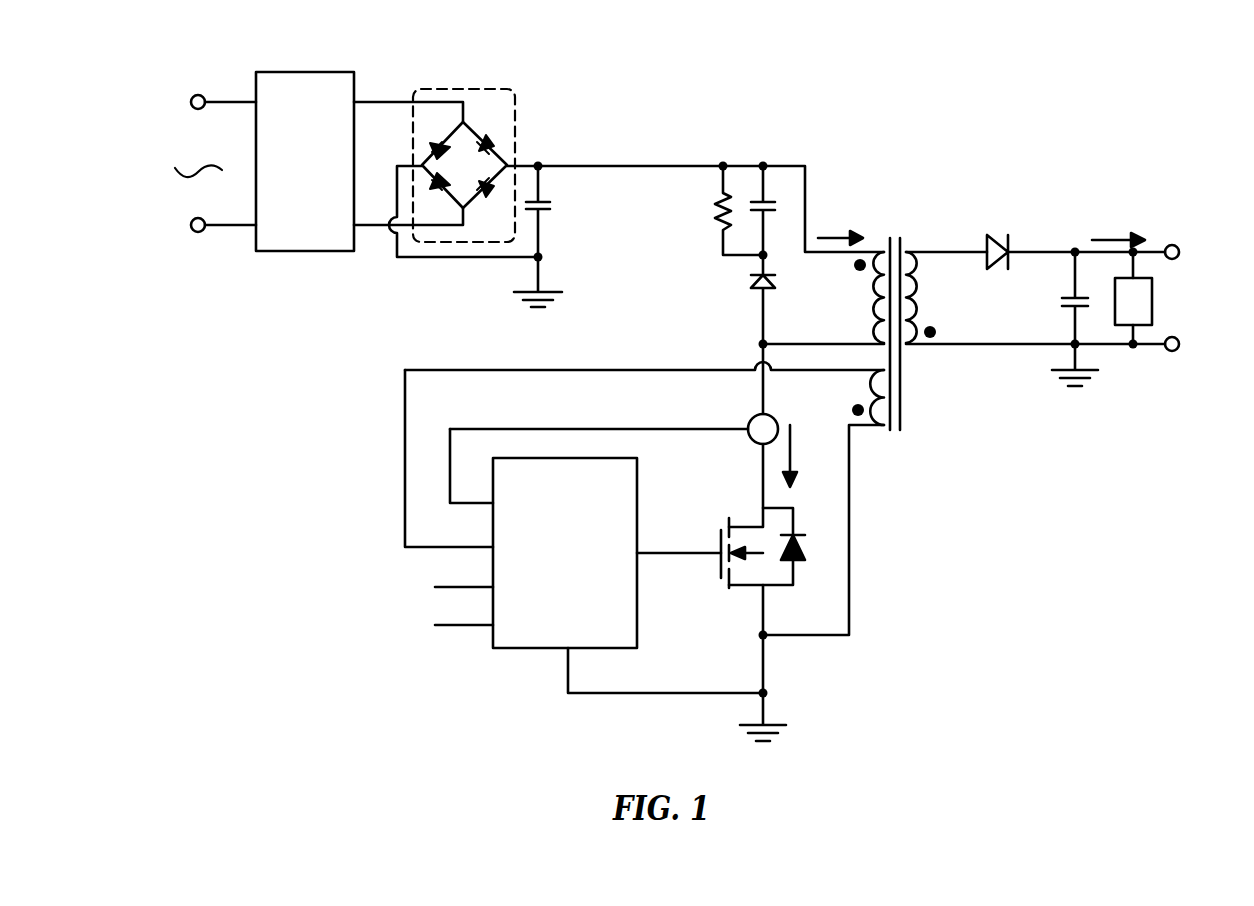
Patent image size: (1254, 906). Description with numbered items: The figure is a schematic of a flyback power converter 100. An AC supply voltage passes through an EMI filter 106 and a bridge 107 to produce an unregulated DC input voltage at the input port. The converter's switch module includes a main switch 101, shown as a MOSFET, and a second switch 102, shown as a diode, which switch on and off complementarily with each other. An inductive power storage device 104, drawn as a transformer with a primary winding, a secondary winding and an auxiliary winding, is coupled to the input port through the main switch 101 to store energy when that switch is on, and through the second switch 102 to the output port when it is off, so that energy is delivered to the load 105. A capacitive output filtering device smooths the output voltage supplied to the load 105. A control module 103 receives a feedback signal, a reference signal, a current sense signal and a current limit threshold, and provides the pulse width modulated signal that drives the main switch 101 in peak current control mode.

The power converter 100 is at (213, 64).
The main switch 101 is at (715, 573).
The second switch 102 is at (998, 232).
The control module 103 is at (553, 625).
The inductive power storage device 104 is at (892, 229).
The load 105 is at (1152, 310).
The EMI filter 106 is at (283, 227).
The bridge 107 is at (515, 122).